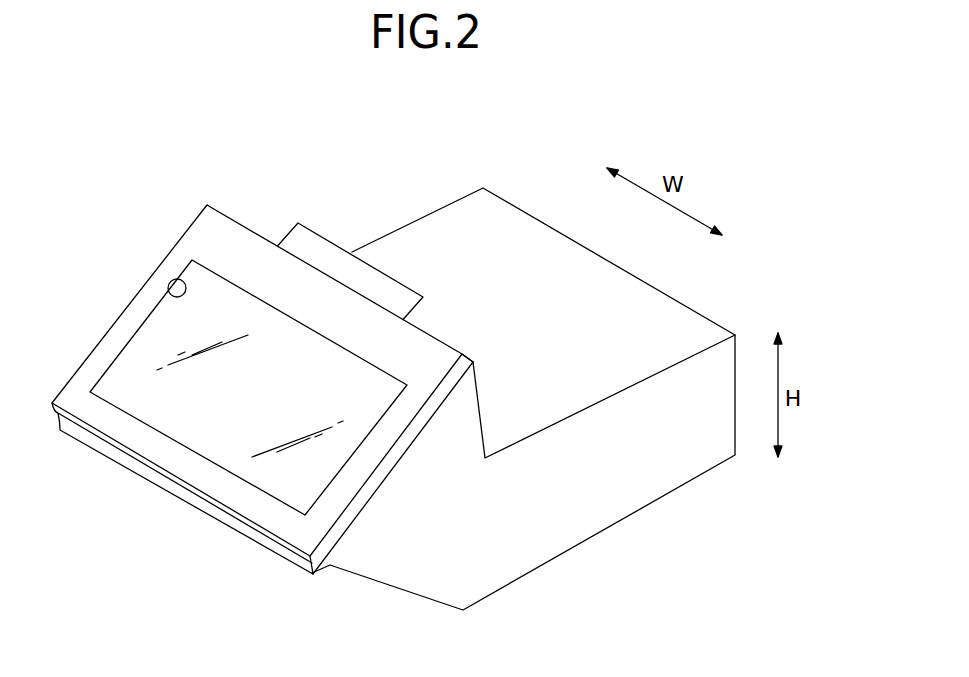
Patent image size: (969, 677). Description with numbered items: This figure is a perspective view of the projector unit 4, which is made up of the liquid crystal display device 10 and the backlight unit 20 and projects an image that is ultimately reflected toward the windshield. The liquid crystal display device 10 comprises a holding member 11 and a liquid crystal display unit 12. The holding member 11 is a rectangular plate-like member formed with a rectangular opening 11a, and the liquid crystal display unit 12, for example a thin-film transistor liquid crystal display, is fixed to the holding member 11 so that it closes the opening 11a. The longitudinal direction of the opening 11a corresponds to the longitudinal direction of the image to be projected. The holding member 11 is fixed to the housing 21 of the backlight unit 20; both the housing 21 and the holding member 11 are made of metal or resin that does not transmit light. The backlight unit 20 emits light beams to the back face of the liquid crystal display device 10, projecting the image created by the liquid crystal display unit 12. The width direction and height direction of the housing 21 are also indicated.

The projector unit 4 is at (361, 149).
The backlight unit 20 is at (476, 160).
The housing 21 is at (447, 233).
The liquid crystal display device 10 is at (186, 184).
The holding member 11 is at (232, 211).
The opening 11a is at (165, 286).
The liquid crystal display unit 12 is at (146, 346).